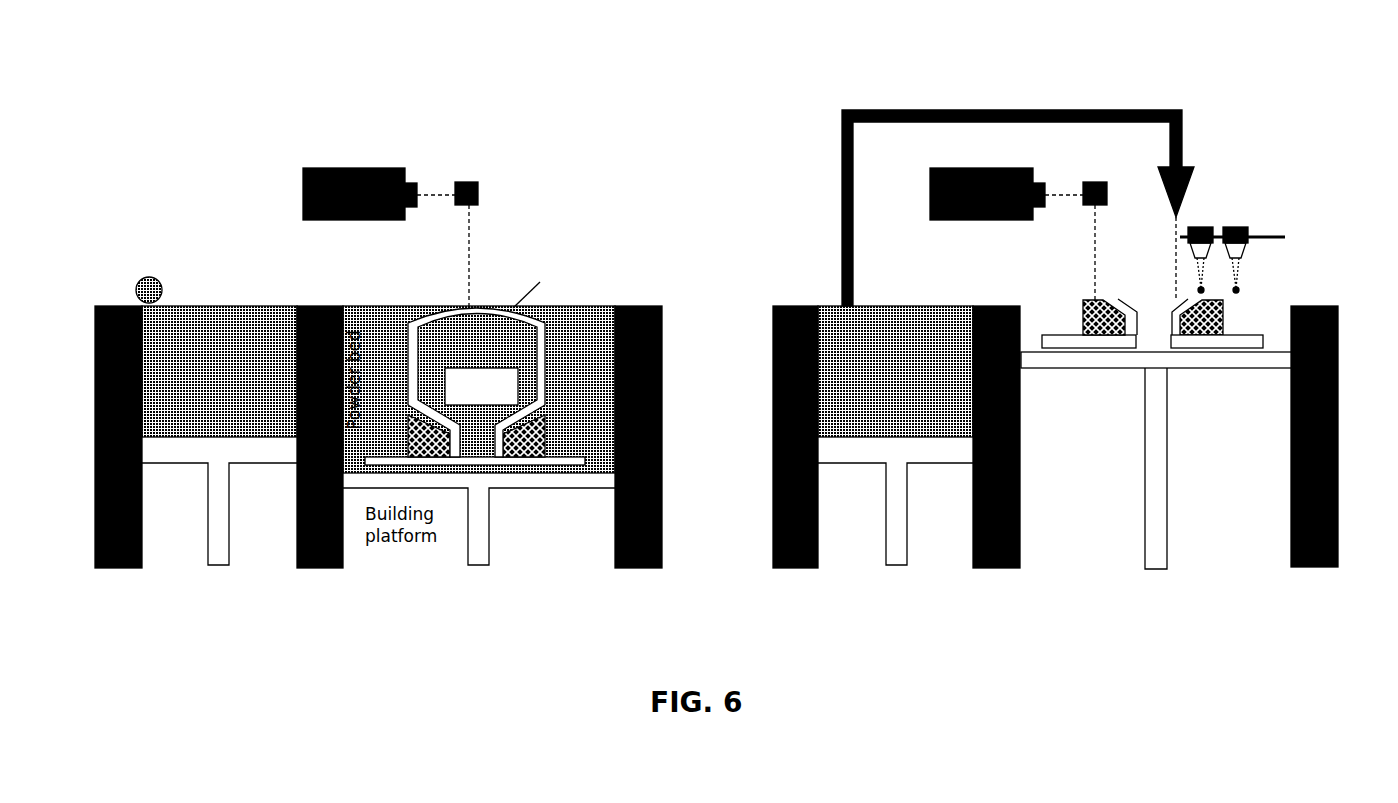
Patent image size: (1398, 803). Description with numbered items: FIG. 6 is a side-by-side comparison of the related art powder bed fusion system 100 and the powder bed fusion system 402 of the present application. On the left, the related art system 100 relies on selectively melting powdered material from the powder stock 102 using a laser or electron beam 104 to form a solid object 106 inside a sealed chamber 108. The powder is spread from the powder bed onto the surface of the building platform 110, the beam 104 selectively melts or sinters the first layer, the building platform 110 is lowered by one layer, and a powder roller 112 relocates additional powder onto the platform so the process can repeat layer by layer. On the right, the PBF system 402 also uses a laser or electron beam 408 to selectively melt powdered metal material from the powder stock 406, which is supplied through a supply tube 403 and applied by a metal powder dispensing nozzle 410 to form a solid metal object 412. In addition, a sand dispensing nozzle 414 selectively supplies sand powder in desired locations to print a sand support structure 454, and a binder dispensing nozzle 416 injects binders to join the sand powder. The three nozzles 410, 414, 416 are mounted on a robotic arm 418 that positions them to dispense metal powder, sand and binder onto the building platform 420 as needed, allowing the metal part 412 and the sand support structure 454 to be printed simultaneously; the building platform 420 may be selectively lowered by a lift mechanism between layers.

The PBF system 100 is at (243, 131).
The powder stock 102 is at (248, 410).
The laser or electron beam 104 is at (388, 168).
The solid object 106 is at (540, 353).
The sealed chamber 108 is at (481, 386).
The building platform 110 is at (547, 481).
The powder roller 112 is at (137, 296).
The PBF system 402 is at (1203, 152).
The supply tube 403 is at (842, 110).
The powder stock 406 is at (833, 333).
The laser or electron beam 408 is at (968, 220).
The metal powder dispensing nozzle 410 is at (1163, 183).
The solid object 412 is at (1195, 340).
The sand dispensing nozzle 414 is at (1203, 223).
The binder dispensing nozzle 416 is at (1237, 250).
The robotic arm 418 is at (1183, 237).
The building platform 420 is at (1150, 368).
The sand support structure 454 is at (1225, 318).